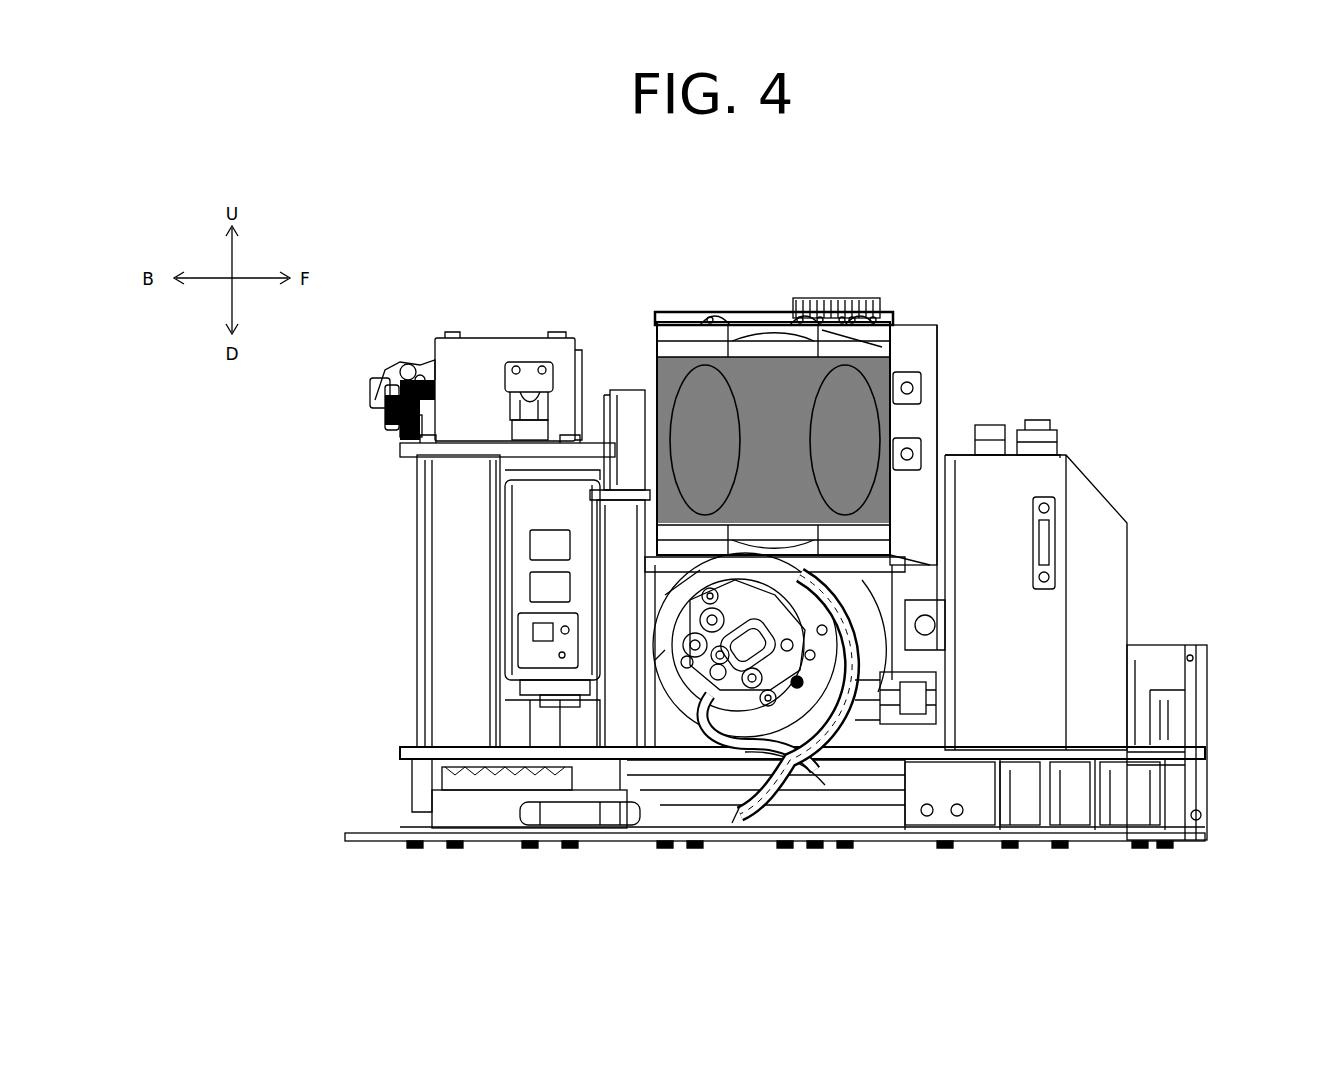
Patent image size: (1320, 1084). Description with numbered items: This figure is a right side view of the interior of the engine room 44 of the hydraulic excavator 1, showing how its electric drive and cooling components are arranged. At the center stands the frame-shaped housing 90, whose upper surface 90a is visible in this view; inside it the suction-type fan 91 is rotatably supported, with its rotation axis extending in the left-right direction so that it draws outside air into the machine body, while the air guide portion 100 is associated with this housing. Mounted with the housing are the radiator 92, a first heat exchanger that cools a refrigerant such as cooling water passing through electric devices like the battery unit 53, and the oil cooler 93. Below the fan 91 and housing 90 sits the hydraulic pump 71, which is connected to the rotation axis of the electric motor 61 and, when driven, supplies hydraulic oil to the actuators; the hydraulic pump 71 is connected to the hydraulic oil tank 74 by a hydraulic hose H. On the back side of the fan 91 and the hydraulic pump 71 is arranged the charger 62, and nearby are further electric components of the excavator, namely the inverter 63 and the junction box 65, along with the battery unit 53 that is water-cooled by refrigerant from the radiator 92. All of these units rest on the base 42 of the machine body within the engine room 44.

The hydraulic excavator 1 is at (1184, 268).
The air guide portion 100 is at (958, 349).
The engine room 44 is at (1158, 377).
The base plate 42 is at (378, 841).
The battery unit 53 is at (445, 513).
The junction box 65 is at (483, 356).
The charger 62 is at (517, 578).
The inverter 63 is at (625, 392).
The housing 90 is at (651, 340).
The upper surface 90a is at (728, 320).
The fan 91 is at (765, 338).
The oil cooler 93 is at (830, 315).
The radiator 92 is at (871, 352).
The hydraulic pump 71 is at (705, 682).
The hydraulic hose H is at (878, 795).
The electric motor 61 is at (905, 640).
The hydraulic oil tank 74 is at (1085, 531).